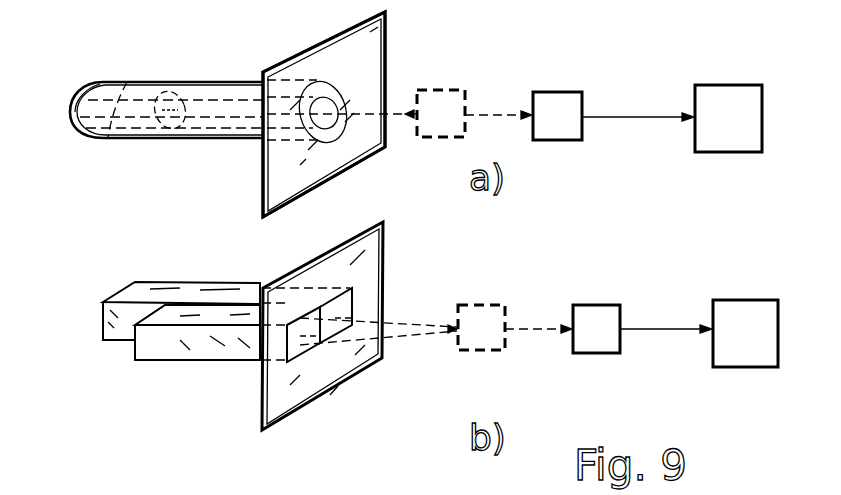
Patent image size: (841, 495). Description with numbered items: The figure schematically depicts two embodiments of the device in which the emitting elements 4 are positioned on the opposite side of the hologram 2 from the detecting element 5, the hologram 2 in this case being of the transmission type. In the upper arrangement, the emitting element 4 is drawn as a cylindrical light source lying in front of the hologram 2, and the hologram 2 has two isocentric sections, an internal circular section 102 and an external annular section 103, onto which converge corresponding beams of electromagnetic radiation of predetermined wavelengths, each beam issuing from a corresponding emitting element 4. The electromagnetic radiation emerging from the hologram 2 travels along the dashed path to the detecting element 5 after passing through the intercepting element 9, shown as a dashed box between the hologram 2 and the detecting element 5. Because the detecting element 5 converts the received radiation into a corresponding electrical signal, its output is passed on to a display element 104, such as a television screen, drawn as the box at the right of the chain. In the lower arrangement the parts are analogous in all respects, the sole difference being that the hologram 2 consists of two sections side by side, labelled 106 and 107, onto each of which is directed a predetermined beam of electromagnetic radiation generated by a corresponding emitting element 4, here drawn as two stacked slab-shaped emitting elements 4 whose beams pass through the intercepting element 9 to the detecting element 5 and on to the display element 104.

The hologram 2 is at (318, 147).
The emitting element 4 is at (75, 124).
The detecting element 5 is at (548, 108).
The intercepting element 9 is at (443, 107).
The internal circular section 102 is at (322, 107).
The external annular section 103 is at (342, 93).
The display element 104 is at (720, 142).
The first side-by-side section 106 is at (302, 347).
The second side-by-side section 107 is at (338, 325).